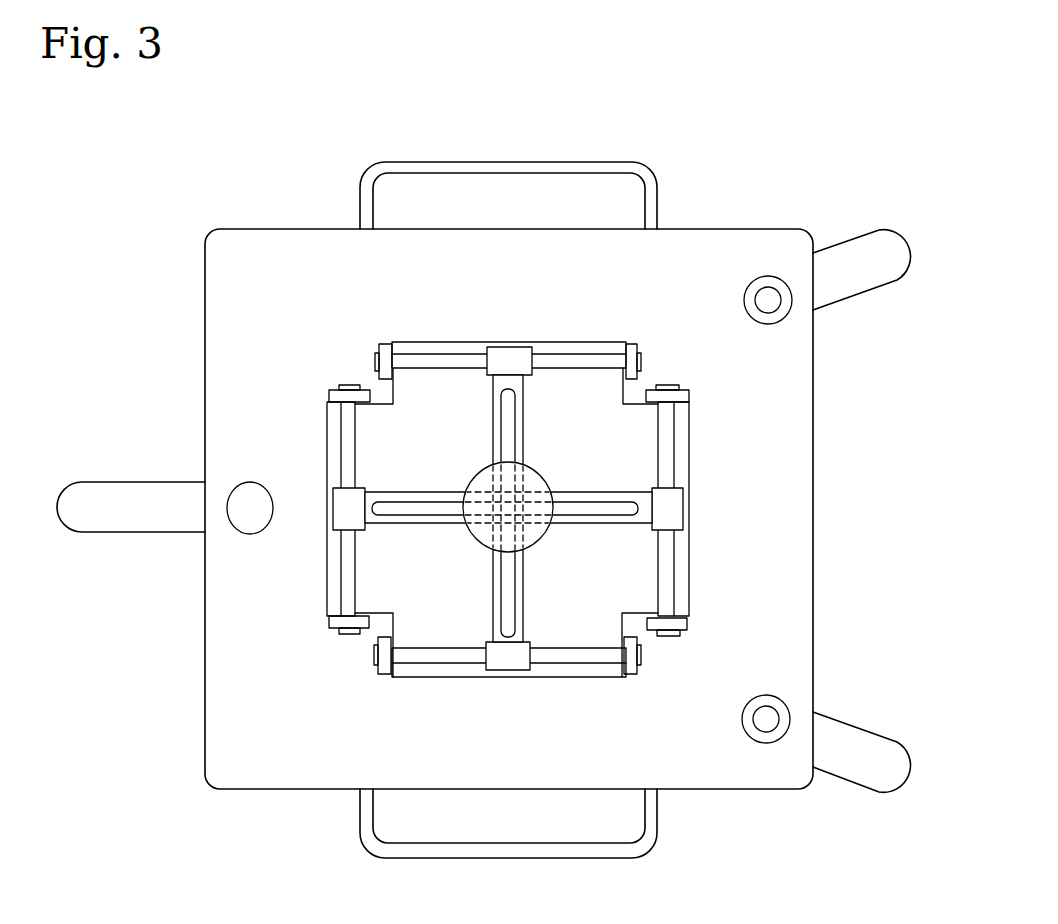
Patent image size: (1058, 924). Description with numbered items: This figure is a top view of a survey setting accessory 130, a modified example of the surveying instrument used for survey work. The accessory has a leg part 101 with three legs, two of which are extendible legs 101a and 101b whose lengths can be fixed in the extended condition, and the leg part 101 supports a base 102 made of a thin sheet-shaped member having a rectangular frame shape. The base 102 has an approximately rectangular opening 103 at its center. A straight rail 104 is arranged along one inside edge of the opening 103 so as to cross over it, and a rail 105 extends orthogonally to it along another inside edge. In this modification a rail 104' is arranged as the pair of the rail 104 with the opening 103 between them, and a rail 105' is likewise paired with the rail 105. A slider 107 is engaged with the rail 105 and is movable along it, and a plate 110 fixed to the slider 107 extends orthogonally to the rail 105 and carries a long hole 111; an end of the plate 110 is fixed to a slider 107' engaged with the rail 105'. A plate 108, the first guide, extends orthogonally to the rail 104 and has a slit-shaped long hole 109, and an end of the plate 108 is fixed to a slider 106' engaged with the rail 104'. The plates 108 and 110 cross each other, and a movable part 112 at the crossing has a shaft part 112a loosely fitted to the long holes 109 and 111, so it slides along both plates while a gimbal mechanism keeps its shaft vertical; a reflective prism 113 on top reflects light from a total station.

The survey setting accessory 130 is at (778, 198).
The base 102 is at (793, 375).
The leg part 101 is at (100, 540).
The extendible leg 101a is at (852, 746).
The extendible leg 101b is at (882, 260).
The opening 103 is at (580, 403).
The rail 104 is at (508, 242).
The rail 104' is at (507, 770).
The rail 105 is at (762, 510).
The rail 105' is at (249, 514).
The slider 106' is at (500, 772).
The slider 107 is at (765, 504).
The slider 107' is at (232, 473).
The plate 108 is at (685, 508).
The long hole 109 is at (507, 597).
The plate 110 is at (541, 648).
The long hole 111 is at (410, 507).
The movable part 112 is at (478, 466).
The shaft part 112a is at (502, 505).
The reflective prism 113 is at (533, 487).